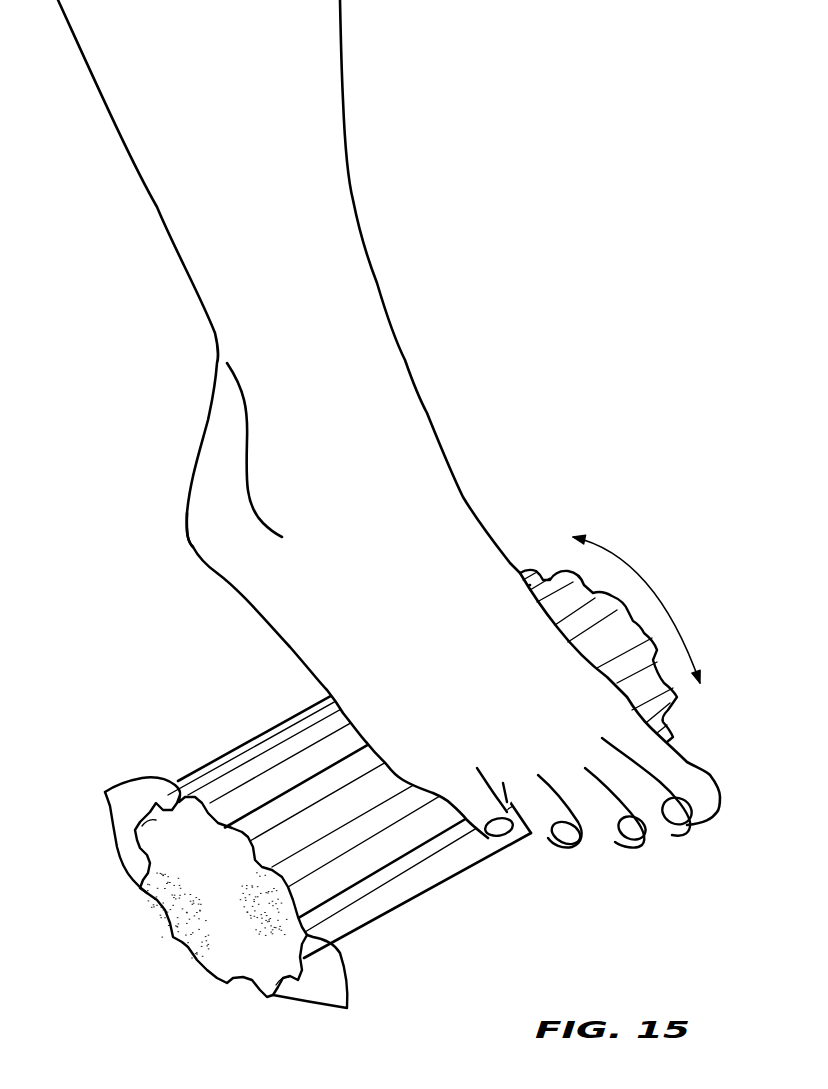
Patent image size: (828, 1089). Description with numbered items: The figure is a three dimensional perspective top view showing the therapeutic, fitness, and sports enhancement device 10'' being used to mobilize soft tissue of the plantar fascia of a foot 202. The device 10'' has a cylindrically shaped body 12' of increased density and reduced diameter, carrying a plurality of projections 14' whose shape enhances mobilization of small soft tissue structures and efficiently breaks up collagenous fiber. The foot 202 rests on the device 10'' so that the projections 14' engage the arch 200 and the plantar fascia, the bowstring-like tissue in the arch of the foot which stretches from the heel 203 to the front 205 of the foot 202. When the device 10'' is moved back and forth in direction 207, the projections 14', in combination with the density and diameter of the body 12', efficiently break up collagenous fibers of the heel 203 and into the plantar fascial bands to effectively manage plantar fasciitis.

The therapeutic, fitness, and sports enhancement device 10'' is at (349, 771).
The cylindrically shaped body 12' is at (221, 896).
The plurality of projections 14' is at (226, 903).
The arch 200 is at (290, 646).
The foot 202 is at (478, 511).
The heel 203 is at (192, 551).
The front of foot 205 is at (665, 852).
The direction 207 is at (653, 587).